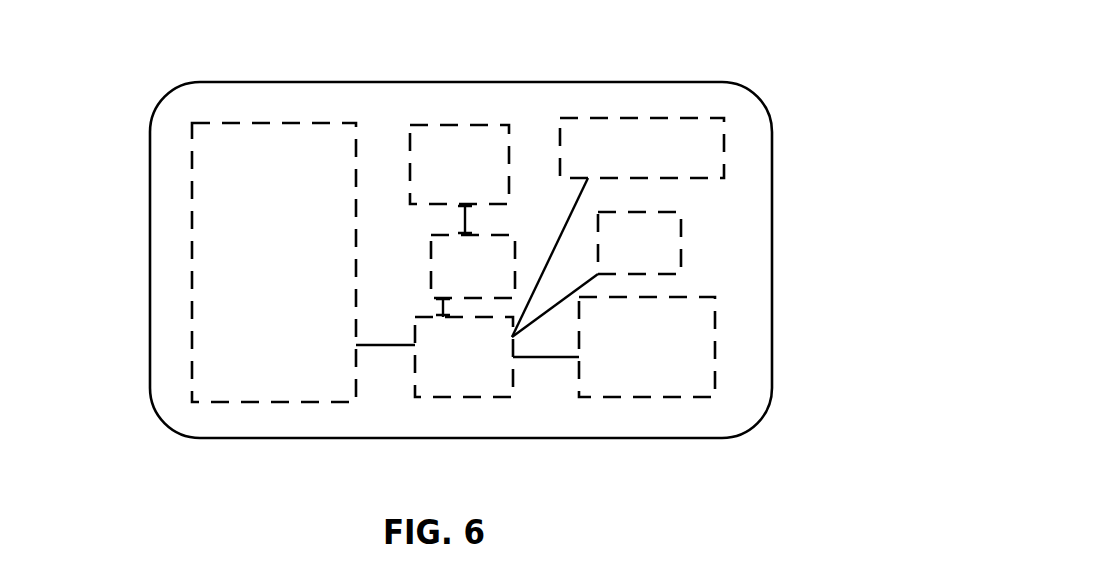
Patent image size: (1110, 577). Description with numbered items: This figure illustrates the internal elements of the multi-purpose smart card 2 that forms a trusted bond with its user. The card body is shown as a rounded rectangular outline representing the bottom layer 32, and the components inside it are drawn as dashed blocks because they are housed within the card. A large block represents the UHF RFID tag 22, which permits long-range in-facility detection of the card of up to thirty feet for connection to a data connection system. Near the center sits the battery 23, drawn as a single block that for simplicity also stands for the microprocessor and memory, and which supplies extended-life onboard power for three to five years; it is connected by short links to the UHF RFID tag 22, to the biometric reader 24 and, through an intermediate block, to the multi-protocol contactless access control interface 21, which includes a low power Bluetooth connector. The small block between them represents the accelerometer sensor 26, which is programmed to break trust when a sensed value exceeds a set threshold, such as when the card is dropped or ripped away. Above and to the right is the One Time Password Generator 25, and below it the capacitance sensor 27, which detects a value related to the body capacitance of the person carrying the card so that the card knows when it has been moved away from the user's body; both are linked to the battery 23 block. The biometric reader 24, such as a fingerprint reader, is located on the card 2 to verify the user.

The multi-purpose smart card 2 is at (134, 95).
The multi-protocol contactless access control interface 21 is at (448, 163).
The UHF RFID tag 22 is at (227, 240).
The battery 23 is at (472, 360).
The biometric reader 24 is at (683, 363).
The One Time Password Generator 25 is at (678, 155).
The accelerometer sensor 26 is at (488, 273).
The capacitance sensor 27 is at (672, 250).
The bottom layer 32 is at (773, 180).